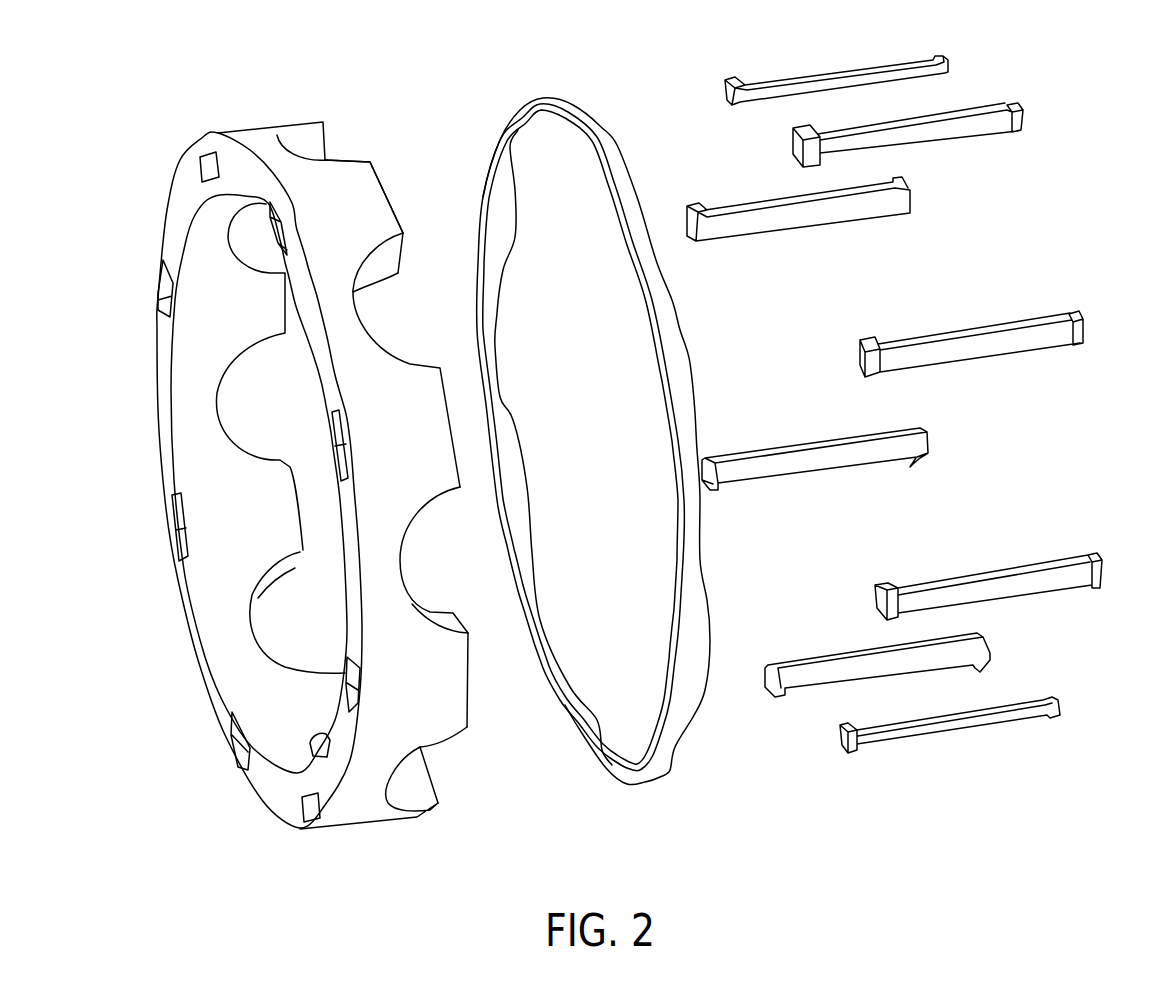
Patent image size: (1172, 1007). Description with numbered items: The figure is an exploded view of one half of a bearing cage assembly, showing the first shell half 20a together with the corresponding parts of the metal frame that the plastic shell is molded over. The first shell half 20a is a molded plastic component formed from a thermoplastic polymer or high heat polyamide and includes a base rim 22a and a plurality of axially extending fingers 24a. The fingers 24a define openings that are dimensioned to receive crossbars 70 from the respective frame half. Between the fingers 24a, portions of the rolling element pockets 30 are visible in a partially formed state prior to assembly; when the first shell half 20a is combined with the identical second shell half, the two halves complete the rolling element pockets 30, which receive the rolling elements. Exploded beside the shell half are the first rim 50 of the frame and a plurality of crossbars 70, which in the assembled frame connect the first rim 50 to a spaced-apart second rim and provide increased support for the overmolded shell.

The first shell half 20a is at (274, 118).
The base rim 22a is at (183, 162).
The axially extending fingers 24a is at (374, 191).
The rolling element pockets 30 is at (383, 264).
The first rim 50 is at (597, 113).
The crossbars 70 is at (984, 110).